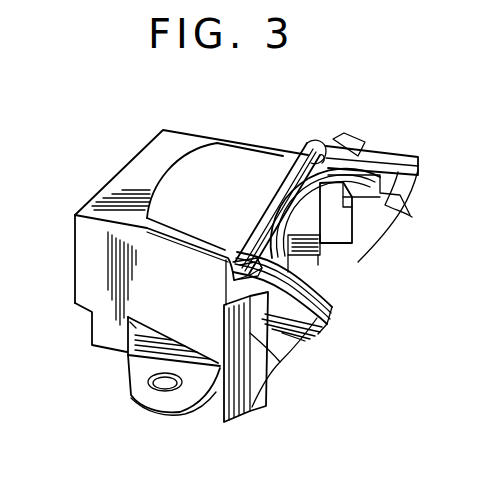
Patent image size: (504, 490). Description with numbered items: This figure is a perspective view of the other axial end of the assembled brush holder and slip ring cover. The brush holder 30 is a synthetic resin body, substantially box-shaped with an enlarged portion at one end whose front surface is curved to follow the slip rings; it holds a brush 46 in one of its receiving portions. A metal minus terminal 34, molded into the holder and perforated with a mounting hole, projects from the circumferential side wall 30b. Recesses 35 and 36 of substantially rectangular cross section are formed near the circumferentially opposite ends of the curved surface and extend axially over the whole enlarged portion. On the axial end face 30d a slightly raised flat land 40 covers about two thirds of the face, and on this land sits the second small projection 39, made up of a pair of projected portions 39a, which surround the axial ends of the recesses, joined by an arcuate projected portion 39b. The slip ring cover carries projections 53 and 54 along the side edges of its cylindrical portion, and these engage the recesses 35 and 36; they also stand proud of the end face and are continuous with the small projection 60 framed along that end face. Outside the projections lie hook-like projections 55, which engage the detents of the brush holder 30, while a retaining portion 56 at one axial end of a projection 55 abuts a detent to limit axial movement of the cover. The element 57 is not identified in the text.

The brush holder 30 is at (97, 191).
The circumferential side wall 30b is at (83, 287).
The axial end face 30d is at (137, 167).
The minus terminal 34 is at (132, 390).
The recess 35 is at (250, 253).
The recess 36 is at (319, 147).
The second small projection 39 is at (252, 197).
The projected portion 39a is at (309, 146).
The arcuate projected portion 39b is at (282, 203).
The flat land 40 is at (193, 173).
The brush 46 is at (352, 258).
The projection 53 is at (302, 332).
The projection 54 is at (345, 160).
The projection of hook-like cross-section 55 is at (233, 422).
The retaining portion 56 is at (287, 361).
The boss 57 is at (378, 198).
The small projection 60 is at (420, 155).